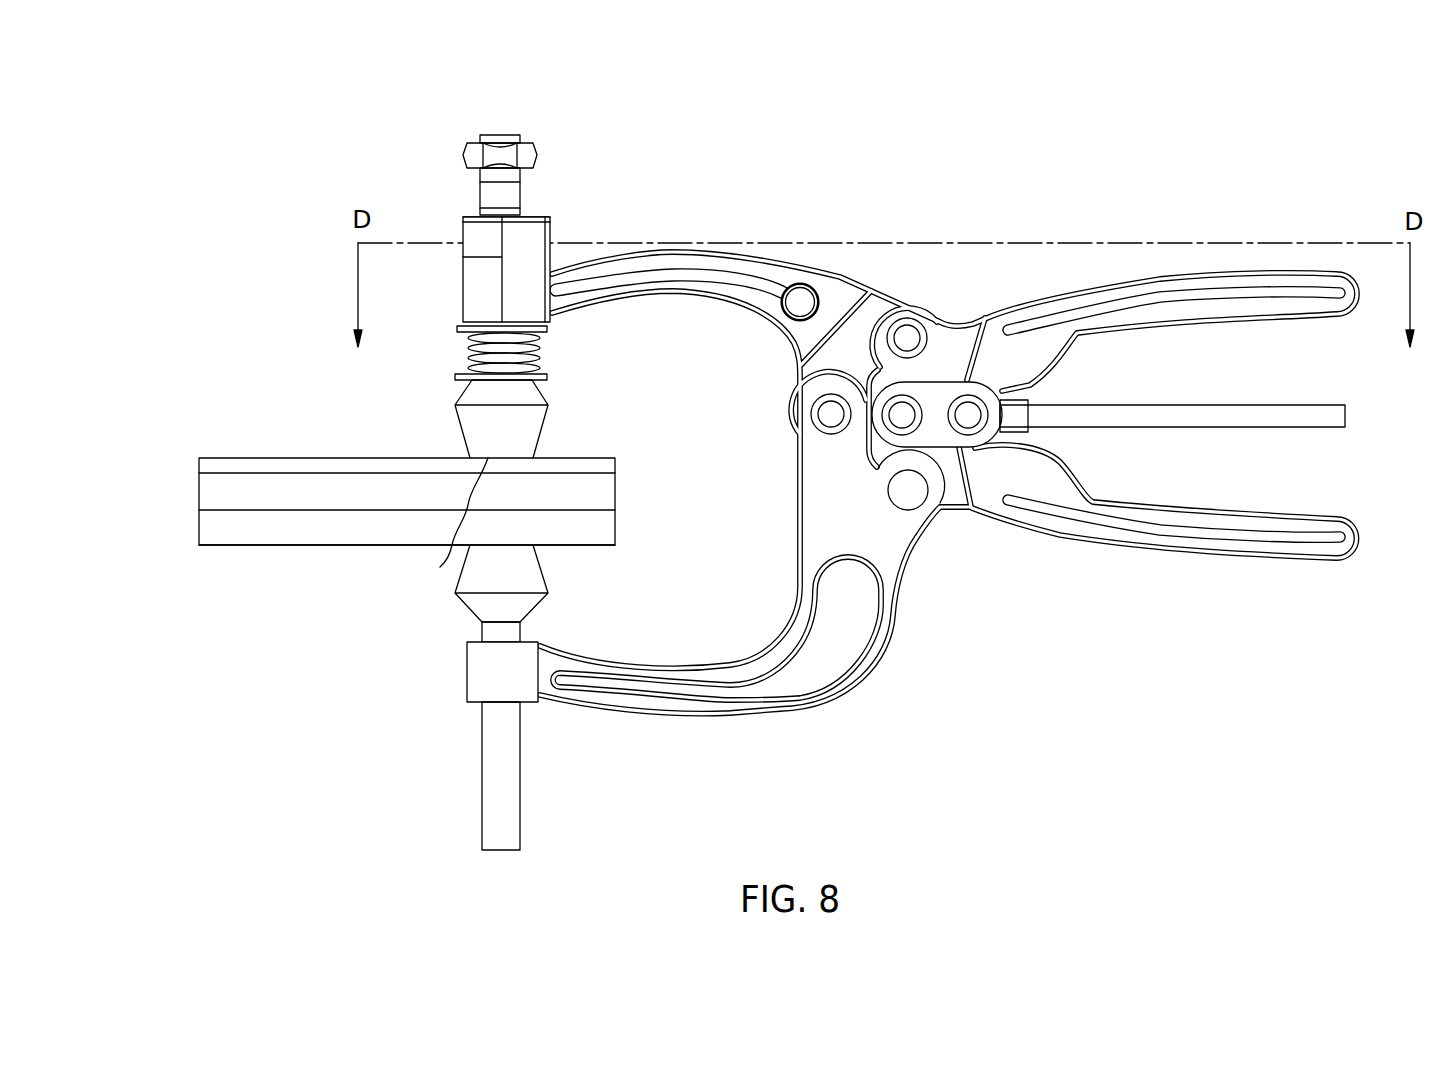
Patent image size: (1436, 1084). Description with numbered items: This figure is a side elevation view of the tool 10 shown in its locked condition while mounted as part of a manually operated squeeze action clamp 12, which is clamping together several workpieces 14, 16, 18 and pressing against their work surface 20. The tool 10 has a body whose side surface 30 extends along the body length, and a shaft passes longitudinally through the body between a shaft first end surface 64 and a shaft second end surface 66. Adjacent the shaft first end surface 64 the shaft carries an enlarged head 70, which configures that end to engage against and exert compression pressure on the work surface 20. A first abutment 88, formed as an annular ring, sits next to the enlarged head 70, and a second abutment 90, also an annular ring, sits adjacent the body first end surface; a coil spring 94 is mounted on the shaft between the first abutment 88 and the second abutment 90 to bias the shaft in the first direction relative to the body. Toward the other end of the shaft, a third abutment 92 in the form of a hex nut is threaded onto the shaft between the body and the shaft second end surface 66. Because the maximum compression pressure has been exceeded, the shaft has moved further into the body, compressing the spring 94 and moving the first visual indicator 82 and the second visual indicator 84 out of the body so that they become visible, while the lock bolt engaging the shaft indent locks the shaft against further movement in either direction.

The tool 10 is at (948, 478).
The squeeze action clamp 12 is at (845, 258).
The workpiece 14 is at (197, 466).
The workpiece 16 is at (197, 497).
The workpiece 18 is at (197, 530).
The work surface 20 is at (365, 493).
The side surface 30 is at (463, 281).
The shaft first end surface 64 is at (440, 567).
The shaft second end surface 66 is at (500, 135).
The enlarged head 70 is at (468, 422).
The first visual indicator 82 is at (522, 193).
The second visual indicator 84 is at (521, 215).
The first abutment 88 is at (548, 377).
The second abutment 90 is at (460, 328).
The third abutment 92 is at (473, 141).
The spring 94 is at (470, 353).